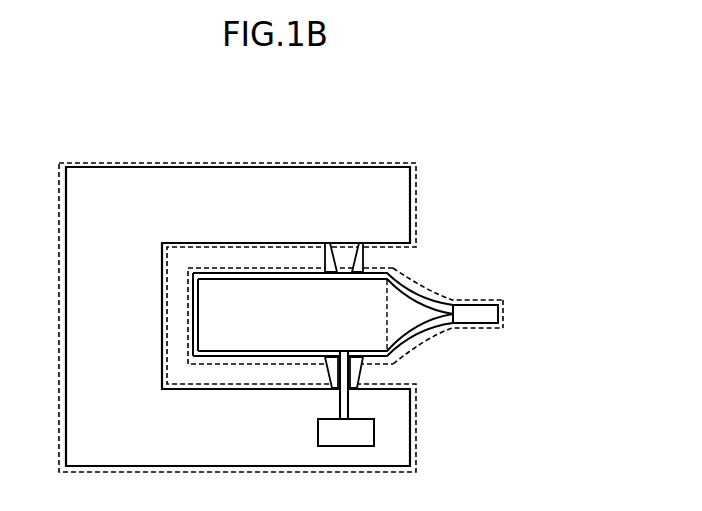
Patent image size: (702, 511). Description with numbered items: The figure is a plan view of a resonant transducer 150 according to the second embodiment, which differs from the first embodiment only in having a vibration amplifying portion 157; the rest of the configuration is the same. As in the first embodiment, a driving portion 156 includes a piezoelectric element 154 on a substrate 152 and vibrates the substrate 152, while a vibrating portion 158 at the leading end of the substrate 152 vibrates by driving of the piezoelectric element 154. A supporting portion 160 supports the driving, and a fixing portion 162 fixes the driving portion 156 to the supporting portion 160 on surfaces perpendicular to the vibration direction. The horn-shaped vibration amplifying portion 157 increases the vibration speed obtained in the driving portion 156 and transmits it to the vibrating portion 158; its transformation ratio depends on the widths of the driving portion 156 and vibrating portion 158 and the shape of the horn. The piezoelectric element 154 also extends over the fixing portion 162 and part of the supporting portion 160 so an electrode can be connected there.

The optical modulator device 150 is at (436, 140).
The electrode 152 is at (410, 199).
The tapered waveguide portion 154 is at (395, 289).
The driving portion 156 is at (433, 337).
The vibration amplifying portion 157 is at (465, 302).
The vibrating portion 158 is at (498, 313).
The cladding outline 160 is at (231, 173).
The electrode pad 162 is at (345, 247).